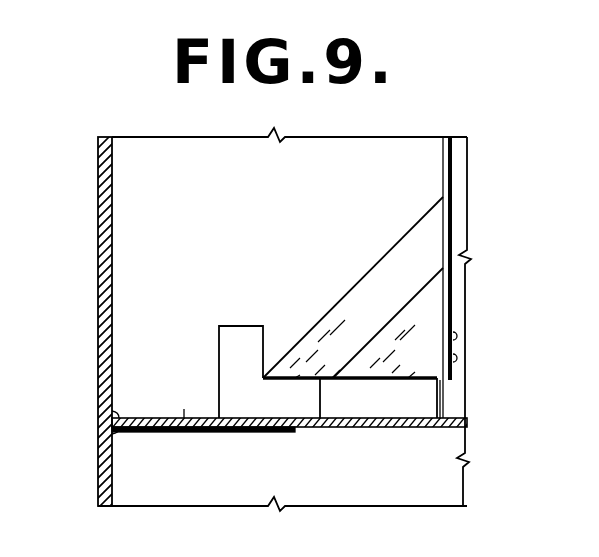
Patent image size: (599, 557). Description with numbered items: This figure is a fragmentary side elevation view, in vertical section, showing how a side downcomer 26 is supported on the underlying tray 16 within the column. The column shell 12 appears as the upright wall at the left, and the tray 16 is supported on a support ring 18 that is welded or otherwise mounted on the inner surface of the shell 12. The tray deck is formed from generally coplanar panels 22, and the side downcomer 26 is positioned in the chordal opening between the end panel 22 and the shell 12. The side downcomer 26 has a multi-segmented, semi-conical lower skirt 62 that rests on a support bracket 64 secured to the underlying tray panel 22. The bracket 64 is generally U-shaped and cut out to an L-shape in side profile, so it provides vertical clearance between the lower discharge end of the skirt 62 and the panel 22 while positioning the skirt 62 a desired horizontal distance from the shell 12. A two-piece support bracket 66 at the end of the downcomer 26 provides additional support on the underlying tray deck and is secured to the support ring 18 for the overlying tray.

The column shell 12 is at (100, 222).
The fluid-fluid contact tray 16 is at (405, 431).
The support ring 18 is at (173, 435).
The tray panel 22 is at (376, 410).
The side downcomer 26 is at (327, 301).
The downcomer skirt 62 is at (388, 252).
The support bracket 64 is at (220, 351).
The support bracket 66 is at (447, 402).